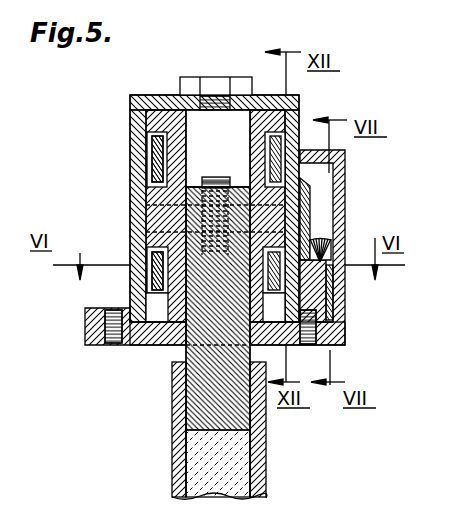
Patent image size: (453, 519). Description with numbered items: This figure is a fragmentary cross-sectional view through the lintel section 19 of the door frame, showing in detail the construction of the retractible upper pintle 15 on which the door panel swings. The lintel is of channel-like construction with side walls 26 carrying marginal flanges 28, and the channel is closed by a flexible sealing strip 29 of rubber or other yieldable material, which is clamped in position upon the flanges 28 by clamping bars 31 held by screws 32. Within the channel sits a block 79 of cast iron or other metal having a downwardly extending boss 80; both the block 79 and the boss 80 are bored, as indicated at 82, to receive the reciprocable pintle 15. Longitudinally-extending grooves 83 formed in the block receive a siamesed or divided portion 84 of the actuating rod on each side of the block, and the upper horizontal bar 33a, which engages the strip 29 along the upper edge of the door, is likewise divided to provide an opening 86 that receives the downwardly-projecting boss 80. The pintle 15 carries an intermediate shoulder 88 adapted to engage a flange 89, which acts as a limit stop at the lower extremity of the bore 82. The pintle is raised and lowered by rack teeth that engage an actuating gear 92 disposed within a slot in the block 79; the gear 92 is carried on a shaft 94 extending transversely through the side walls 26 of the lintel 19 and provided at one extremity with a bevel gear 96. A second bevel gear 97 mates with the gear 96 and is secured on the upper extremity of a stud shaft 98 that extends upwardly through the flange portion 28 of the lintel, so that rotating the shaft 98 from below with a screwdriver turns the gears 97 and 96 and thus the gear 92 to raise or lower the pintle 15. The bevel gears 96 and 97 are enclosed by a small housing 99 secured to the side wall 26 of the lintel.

The lintel section 19 is at (147, 95).
The bore 82 is at (203, 120).
The block 79 is at (299, 108).
The side walls 26 is at (300, 114).
The siamesed or divided portion of rod 84 is at (282, 140).
The bevel gear 96 is at (308, 188).
The second bevel gear 97 is at (344, 231).
The housing 99 is at (340, 260).
The stud shaft 98 is at (335, 295).
The marginal flanges 28 is at (345, 318).
The clamping bars 31 is at (345, 345).
The screws 32 is at (304, 341).
The longitudinally-extending grooves 83 is at (150, 134).
The opening 86 is at (168, 284).
The boss 80 is at (167, 301).
The intermediate shoulder 88 is at (157, 347).
The flange 89 is at (167, 347).
The flexible sealing strip 29 is at (182, 347).
The pintle 15 is at (203, 405).
The shaft 94 is at (194, 175).
The actuating gear 92 is at (222, 184).
The upper horizontal bar 33a is at (148, 258).